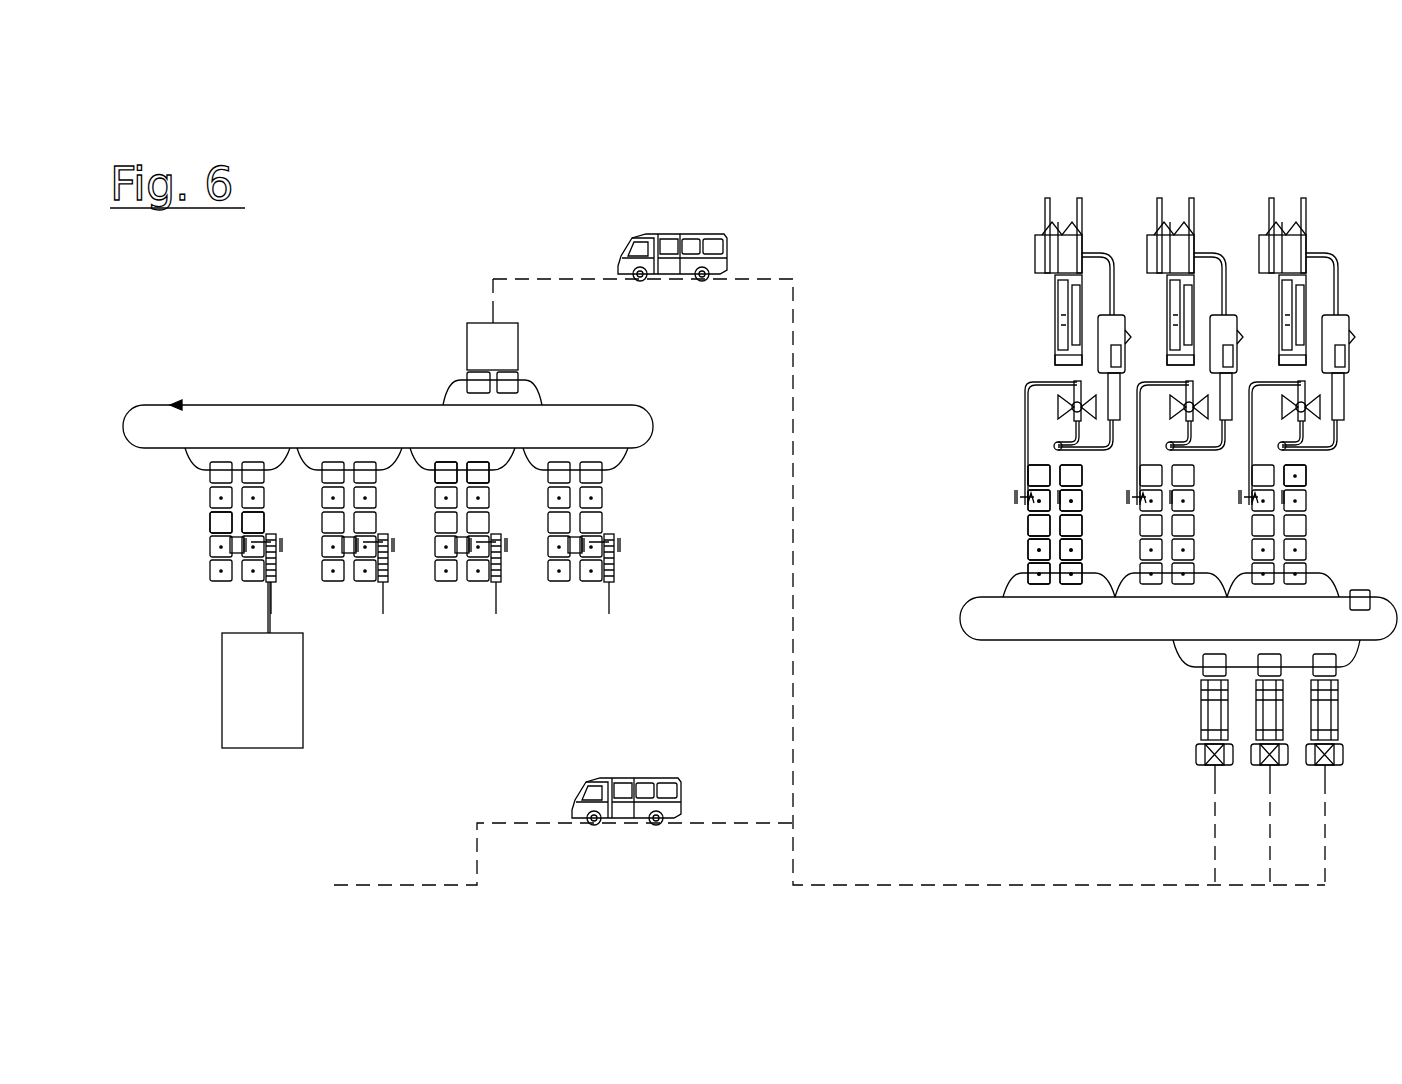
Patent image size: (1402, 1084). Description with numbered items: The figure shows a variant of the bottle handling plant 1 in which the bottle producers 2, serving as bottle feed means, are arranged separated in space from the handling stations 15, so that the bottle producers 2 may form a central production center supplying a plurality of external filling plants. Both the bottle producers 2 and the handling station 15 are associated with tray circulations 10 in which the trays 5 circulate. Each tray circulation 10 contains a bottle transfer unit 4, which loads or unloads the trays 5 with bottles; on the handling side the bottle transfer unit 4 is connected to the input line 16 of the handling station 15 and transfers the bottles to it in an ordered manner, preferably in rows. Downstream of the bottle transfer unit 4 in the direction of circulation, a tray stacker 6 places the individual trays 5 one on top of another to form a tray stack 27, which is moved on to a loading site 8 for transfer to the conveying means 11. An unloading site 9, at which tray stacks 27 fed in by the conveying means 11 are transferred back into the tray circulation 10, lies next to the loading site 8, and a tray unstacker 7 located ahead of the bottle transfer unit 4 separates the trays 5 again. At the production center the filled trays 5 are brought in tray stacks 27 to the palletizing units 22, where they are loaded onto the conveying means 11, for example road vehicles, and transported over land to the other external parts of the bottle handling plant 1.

The bottle handling plant 1 is at (450, 236).
The bottle producers 2 is at (1063, 192).
The bottle transfer unit 4 is at (268, 542).
The trays 5 is at (1305, 478).
The tray stacker 6 is at (247, 524).
The tray unstacker 7 is at (218, 520).
The loading site 8 is at (475, 468).
The unloading site 9 is at (447, 467).
The tray circulation 10 is at (206, 497).
The conveying means 11 is at (683, 230).
The handling station 15 is at (256, 700).
The input line 16 is at (272, 613).
The palletizing unit 22 is at (1200, 752).
The tray stack 27 is at (1360, 590).